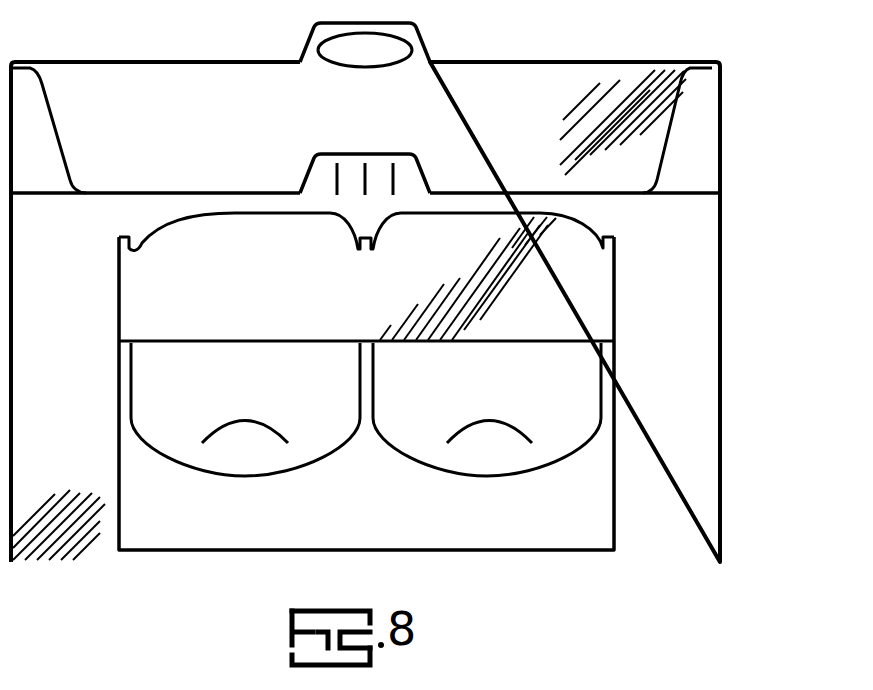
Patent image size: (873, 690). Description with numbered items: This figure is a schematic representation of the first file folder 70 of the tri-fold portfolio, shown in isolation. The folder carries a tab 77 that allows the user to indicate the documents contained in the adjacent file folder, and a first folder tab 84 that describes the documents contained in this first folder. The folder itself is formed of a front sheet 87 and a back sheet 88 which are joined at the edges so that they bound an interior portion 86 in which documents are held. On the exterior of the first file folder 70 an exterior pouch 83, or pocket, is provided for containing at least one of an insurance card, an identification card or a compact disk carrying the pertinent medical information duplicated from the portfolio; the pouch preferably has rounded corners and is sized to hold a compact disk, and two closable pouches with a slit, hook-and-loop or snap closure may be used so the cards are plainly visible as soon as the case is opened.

The housing 70 is at (735, 246).
The tab 77 is at (420, 38).
The first folder tab 84 is at (420, 157).
The interior portion 86 is at (197, 173).
The back sheet 88 is at (418, 125).
The front sheet 87 is at (84, 340).
The exterior pouch 83 is at (617, 450).